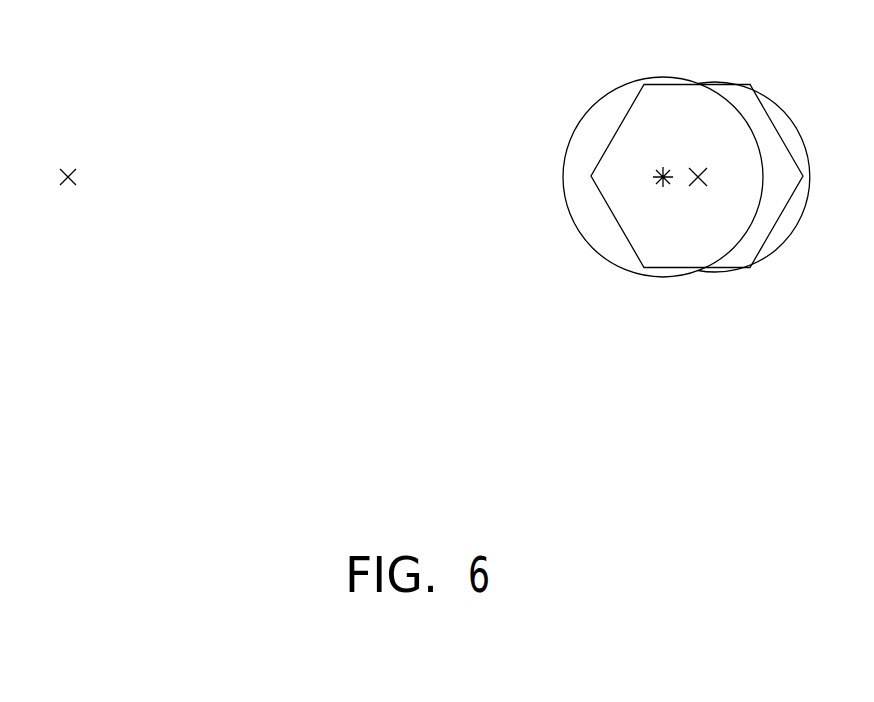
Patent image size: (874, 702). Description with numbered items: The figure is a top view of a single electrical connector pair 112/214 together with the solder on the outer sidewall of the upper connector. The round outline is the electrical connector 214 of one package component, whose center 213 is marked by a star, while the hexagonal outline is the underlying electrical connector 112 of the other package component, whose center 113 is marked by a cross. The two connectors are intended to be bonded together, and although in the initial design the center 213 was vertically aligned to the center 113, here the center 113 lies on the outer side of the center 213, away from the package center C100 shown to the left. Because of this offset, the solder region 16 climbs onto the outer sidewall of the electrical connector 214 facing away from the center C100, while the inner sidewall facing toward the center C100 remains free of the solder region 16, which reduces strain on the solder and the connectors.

The electrical connector 214 is at (590, 243).
The electrical connector 112 is at (727, 84).
The solder region 16 is at (770, 212).
The center 213 is at (664, 185).
The center 113 is at (700, 173).
The center C100 is at (68, 185).